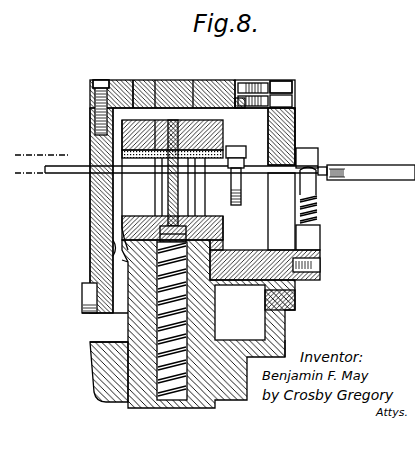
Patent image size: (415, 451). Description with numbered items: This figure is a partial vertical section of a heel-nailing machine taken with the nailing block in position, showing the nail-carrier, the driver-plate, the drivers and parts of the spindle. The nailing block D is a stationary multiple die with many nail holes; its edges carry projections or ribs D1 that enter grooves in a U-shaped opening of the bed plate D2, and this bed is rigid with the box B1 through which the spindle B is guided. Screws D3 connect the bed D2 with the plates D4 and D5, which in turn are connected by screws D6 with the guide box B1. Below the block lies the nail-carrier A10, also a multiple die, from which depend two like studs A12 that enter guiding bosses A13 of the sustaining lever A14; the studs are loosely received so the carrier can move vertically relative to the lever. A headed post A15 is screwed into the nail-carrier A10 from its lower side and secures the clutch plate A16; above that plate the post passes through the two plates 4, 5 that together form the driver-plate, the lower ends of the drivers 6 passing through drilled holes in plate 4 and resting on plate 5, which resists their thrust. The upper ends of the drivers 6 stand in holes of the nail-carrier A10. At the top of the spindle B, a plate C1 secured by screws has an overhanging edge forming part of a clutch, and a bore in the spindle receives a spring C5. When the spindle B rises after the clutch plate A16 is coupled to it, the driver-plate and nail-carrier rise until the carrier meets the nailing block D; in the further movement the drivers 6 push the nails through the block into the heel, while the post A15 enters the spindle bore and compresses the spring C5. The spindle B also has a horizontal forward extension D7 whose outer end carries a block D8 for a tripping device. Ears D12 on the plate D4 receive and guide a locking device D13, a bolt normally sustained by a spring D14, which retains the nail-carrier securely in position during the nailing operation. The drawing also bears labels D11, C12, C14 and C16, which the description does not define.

The nailing block D is at (182, 75).
The projections or ribs D1 is at (258, 74).
The bed plate D2 is at (117, 80).
The screws D3 is at (290, 72).
The plate D4 is at (296, 123).
The plate D5 is at (89, 202).
The screws D6 is at (82, 295).
The horizontal forward extension D7 is at (295, 293).
The block D8 is at (322, 258).
The spring seat block D11 is at (331, 231).
The ears D12 is at (297, 133).
The locking device D13 is at (318, 202).
The spring D14 is at (319, 212).
The nail-carrier A10 is at (122, 128).
The studs A12 is at (241, 196).
The guiding bosses A13 is at (246, 156).
The lever A14 is at (318, 158).
The post A15 is at (168, 186).
The clutch plate A16 is at (113, 250).
The plate 4 is at (203, 222).
The plate 5 is at (218, 230).
The drivers 6 is at (186, 192).
The plate C1 is at (225, 237).
The spring C5 is at (215, 315).
The body wall C12 is at (122, 230).
The lug C14 is at (97, 377).
The body rib C16 is at (120, 266).
The spindle B is at (128, 327).
The box B1 is at (285, 352).